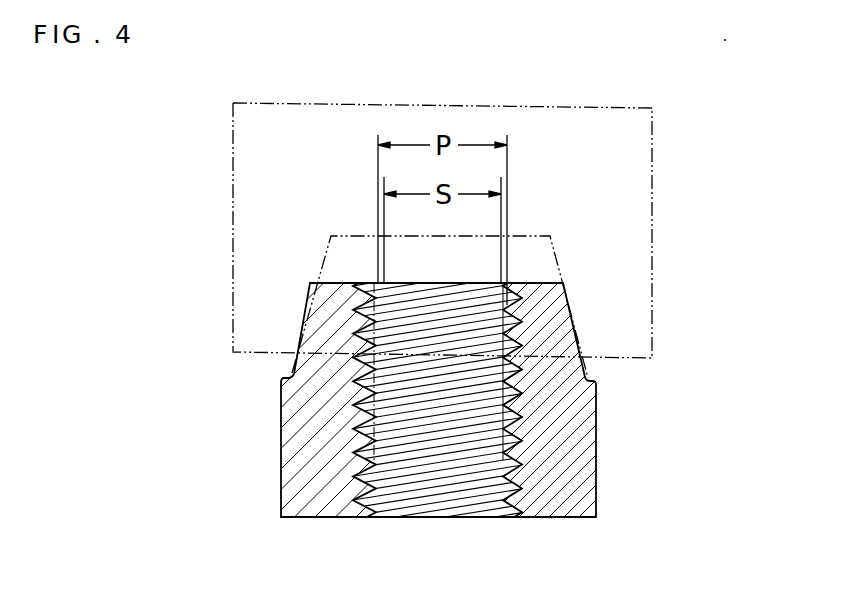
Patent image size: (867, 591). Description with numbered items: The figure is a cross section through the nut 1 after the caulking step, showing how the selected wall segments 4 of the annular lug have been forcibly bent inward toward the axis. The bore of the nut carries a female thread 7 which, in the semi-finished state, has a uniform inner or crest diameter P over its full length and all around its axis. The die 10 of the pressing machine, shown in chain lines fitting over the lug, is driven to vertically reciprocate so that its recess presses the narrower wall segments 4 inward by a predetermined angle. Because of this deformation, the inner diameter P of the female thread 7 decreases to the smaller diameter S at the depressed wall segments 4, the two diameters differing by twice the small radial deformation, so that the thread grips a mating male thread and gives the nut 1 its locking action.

The nut 1 is at (613, 430).
The wall segments 4 is at (298, 338).
The female thread 7 is at (441, 505).
The die 10 is at (652, 222).